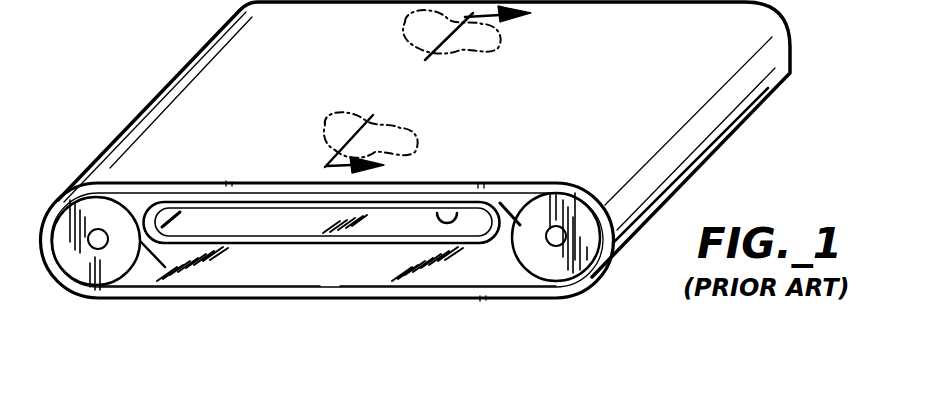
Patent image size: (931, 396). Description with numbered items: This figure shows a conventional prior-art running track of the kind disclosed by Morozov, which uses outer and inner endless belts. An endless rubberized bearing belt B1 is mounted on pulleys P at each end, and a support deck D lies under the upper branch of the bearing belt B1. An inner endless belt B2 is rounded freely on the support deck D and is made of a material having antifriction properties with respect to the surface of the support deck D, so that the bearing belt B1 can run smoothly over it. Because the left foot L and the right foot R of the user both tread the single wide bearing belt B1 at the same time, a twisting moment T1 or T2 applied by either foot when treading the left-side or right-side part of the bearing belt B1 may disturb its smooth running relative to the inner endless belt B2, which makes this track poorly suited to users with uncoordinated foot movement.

The pulleys P is at (92, 213).
The bearing belt B1 is at (125, 183).
The inner endless belt B2 is at (508, 205).
The support deck D is at (458, 213).
The twisting moment T1 is at (327, 157).
The twisting moment T2 is at (430, 49).
The left foot L is at (400, 130).
The right foot R is at (503, 37).